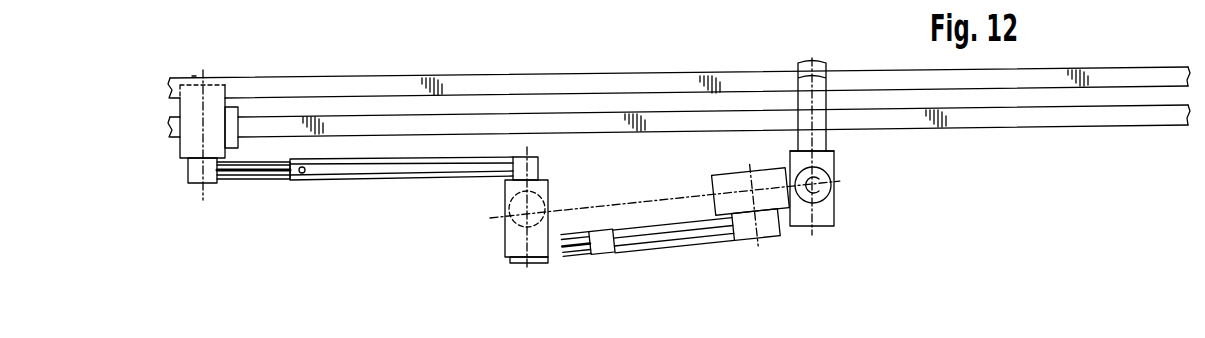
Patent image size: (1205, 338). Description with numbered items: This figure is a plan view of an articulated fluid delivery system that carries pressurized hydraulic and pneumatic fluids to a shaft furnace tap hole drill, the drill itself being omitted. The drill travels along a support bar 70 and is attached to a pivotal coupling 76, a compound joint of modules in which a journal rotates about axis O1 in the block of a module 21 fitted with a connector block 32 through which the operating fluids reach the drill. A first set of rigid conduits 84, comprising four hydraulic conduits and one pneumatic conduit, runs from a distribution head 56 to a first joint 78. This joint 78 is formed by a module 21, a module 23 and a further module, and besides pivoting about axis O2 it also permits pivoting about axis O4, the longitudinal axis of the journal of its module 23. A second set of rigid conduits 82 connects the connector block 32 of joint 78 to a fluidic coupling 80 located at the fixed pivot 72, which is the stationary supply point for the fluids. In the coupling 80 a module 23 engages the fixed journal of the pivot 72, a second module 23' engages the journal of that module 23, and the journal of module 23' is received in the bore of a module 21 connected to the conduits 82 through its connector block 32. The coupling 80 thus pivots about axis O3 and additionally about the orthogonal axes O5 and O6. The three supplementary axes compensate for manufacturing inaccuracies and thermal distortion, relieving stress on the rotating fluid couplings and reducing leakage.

The module 21 is at (217, 100).
The module 23 is at (696, 190).
The second module 23' is at (792, 153).
The connector block 32 is at (237, 110).
The distribution head 56 is at (196, 186).
The support bar 70 is at (387, 83).
The fixed pivot 72 is at (822, 98).
The pivotal coupling 76 is at (191, 73).
The first joint 78 is at (496, 227).
The fluidic coupling 80 is at (852, 190).
The second set of rigid conduits 82 is at (588, 229).
The first set of rigid conduits 84 is at (287, 184).
The pivot axis O1 is at (205, 188).
The pivot axis O2 is at (533, 147).
The pivot axis O3 is at (797, 73).
The supplementary pivot axis O4 is at (500, 200).
The supplementary orthogonal axis O5 is at (830, 157).
The supplementary orthogonal axis O6 is at (690, 193).